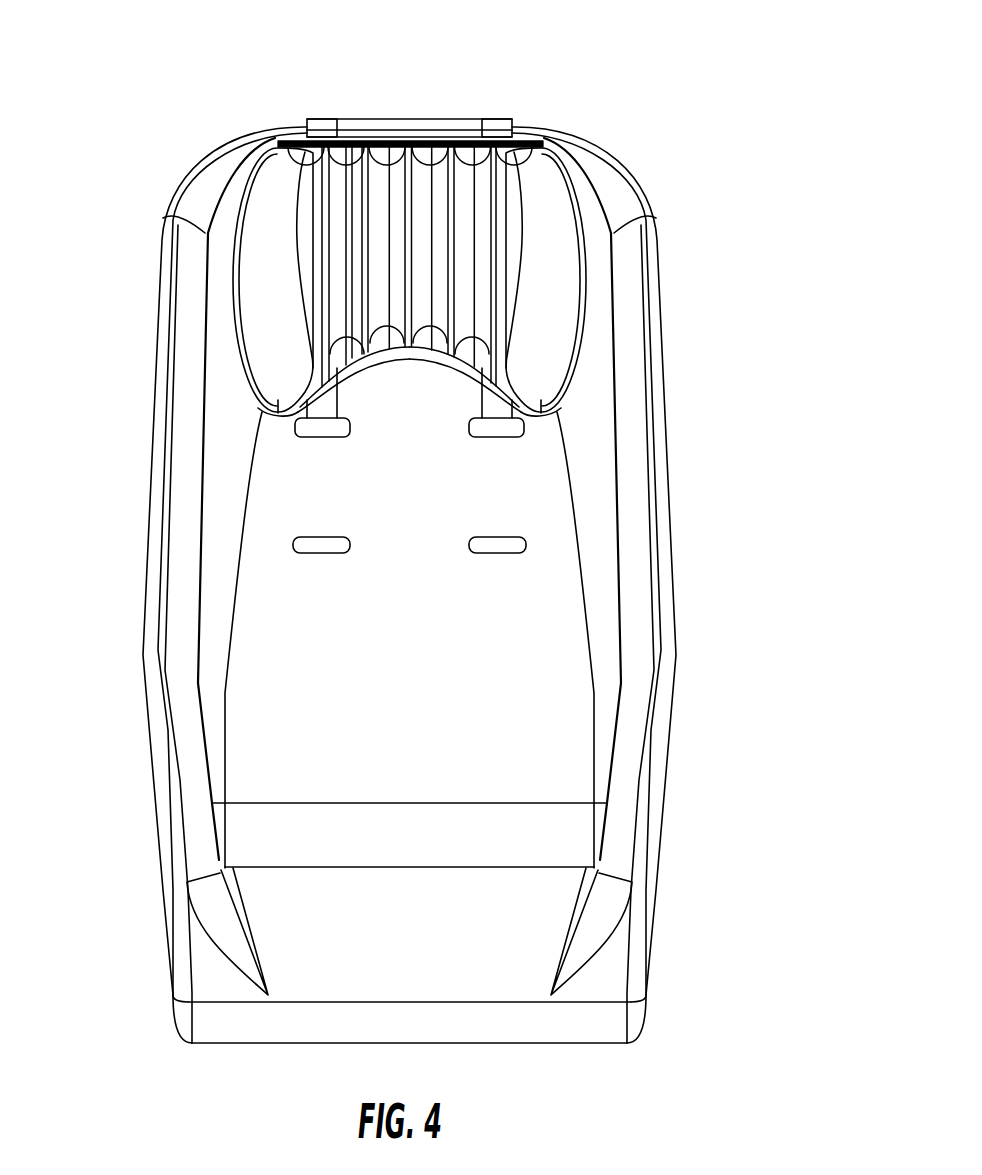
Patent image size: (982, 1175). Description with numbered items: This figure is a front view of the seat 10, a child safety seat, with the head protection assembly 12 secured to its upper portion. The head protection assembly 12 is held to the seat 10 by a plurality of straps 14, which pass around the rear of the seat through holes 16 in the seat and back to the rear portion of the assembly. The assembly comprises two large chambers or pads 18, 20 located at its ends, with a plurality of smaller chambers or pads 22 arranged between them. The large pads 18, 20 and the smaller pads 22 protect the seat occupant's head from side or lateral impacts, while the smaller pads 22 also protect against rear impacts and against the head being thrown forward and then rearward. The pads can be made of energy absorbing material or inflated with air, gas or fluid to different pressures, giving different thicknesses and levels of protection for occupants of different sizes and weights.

The seat 10 is at (768, 576).
The head protection assembly 12 is at (395, 141).
The straps 14 is at (320, 125).
The holes 16 is at (295, 428).
The large chamber or pad 18 is at (228, 207).
The large chamber or pad 20 is at (587, 197).
The smaller chambers or pads 22 is at (303, 157).